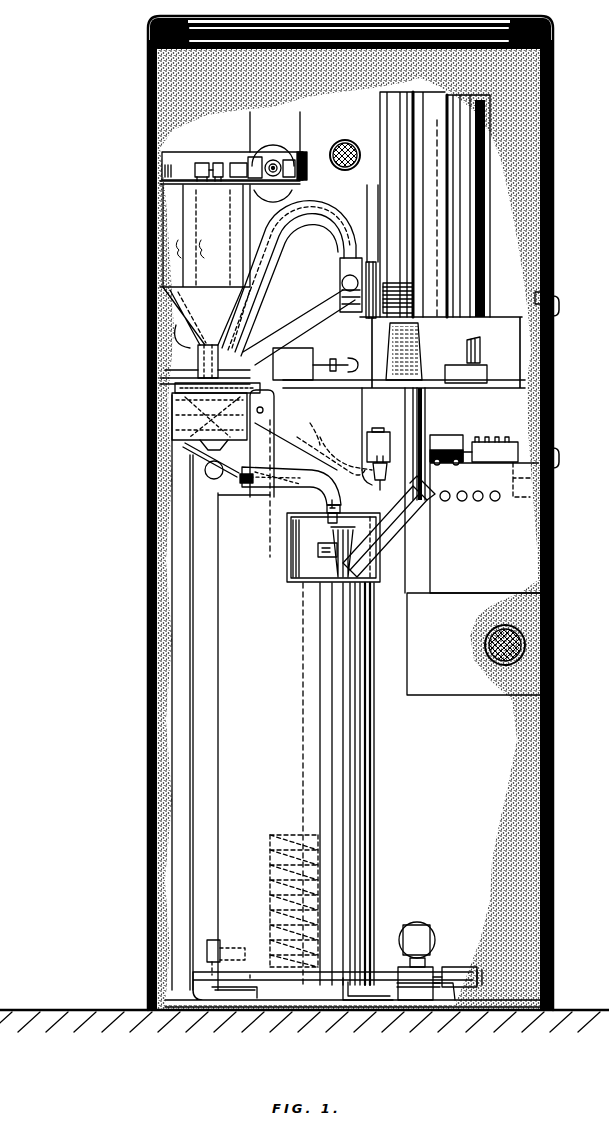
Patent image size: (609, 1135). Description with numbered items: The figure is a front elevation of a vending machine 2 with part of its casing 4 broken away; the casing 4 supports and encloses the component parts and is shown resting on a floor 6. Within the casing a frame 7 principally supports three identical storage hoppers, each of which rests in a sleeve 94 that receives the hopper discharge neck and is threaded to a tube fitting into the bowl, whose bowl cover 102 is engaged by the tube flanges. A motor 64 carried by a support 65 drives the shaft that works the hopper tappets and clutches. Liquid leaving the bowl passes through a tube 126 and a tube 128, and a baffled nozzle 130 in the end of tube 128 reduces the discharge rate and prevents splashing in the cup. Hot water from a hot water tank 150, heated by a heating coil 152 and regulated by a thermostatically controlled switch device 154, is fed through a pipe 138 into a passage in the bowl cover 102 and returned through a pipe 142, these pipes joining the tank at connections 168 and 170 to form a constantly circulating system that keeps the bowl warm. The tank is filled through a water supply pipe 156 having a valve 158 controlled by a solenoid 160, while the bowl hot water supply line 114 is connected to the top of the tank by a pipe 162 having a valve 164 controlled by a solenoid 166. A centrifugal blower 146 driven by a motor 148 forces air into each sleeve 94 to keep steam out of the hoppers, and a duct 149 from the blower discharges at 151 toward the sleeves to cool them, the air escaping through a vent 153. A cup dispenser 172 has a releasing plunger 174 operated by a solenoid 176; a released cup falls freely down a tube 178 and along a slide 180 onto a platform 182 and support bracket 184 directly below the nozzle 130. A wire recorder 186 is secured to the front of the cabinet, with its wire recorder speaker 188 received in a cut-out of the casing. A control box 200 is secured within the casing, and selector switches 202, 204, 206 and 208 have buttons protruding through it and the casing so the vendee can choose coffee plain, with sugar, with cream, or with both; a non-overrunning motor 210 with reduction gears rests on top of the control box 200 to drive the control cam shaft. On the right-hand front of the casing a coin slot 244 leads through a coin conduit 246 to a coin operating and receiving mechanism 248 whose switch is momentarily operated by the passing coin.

The vending machine 2 is at (130, 524).
The casing 4 is at (553, 150).
The floor 6 is at (586, 1010).
The frame 7 is at (262, 300).
The motor 64 is at (282, 156).
The support 65 is at (303, 150).
The sleeve 94 is at (220, 358).
The bowl cover 102 is at (172, 395).
The bowl hot water supply line 114 is at (326, 431).
The tube 126 is at (240, 480).
The tube 128 is at (260, 464).
The baffled nozzle 130 is at (328, 520).
The pipe 138 is at (275, 416).
The pipe 142 is at (208, 760).
The centrifugal blower 146 is at (344, 288).
The motor 148 is at (372, 260).
The duct 149 is at (282, 316).
The hot water tank 150 is at (372, 800).
The duct discharge 151 is at (175, 386).
The heating coil 152 is at (280, 836).
The vent 153 is at (349, 168).
The thermostatically controlled switch device 154 is at (216, 948).
The water supply pipe 156 is at (354, 1012).
The valve 158 is at (432, 962).
The solenoid 160 is at (423, 923).
The pipe 162 is at (341, 445).
The valve 164 is at (386, 472).
The solenoid 166 is at (367, 446).
The tank connection 168 is at (266, 500).
The tank connection 170 is at (232, 971).
The cup dispenser 172 is at (380, 128).
The releasing plunger 174 is at (347, 360).
The solenoid 176 is at (300, 350).
The tube 178 is at (423, 424).
The slide 180 is at (388, 532).
The platform 182 is at (296, 584).
The support bracket 184 is at (318, 553).
The wire recorder 186 is at (449, 695).
The wire recorder speaker 188 is at (503, 634).
The control box 200 is at (540, 562).
The selector switch 202 is at (445, 502).
The selector switch 204 is at (462, 502).
The selector switch 206 is at (478, 502).
The selector switch 208 is at (495, 502).
The non-overrunning motor 210 is at (443, 438).
The coin slot 244 is at (552, 290).
The coin conduit 246 is at (522, 404).
The coin operating and receiving mechanism 248 is at (512, 476).